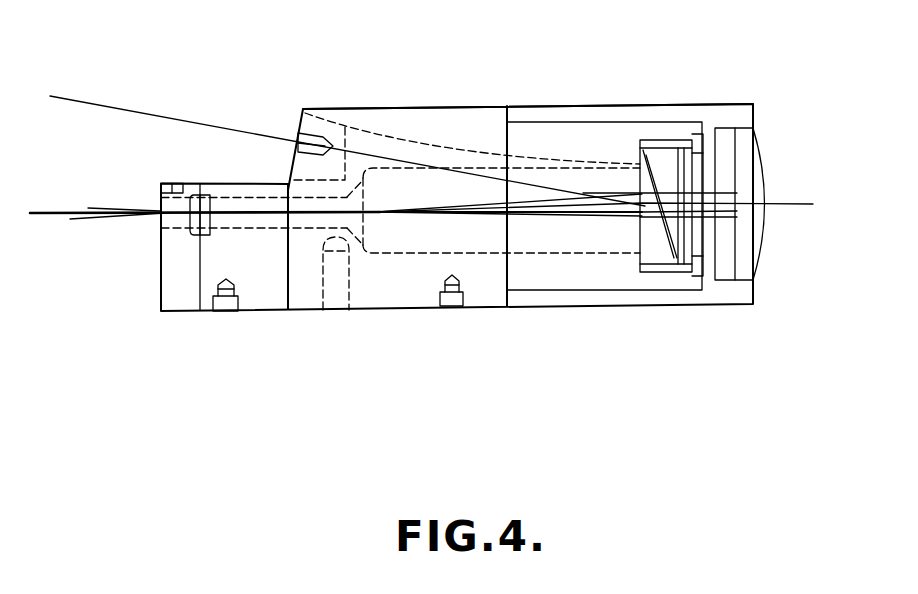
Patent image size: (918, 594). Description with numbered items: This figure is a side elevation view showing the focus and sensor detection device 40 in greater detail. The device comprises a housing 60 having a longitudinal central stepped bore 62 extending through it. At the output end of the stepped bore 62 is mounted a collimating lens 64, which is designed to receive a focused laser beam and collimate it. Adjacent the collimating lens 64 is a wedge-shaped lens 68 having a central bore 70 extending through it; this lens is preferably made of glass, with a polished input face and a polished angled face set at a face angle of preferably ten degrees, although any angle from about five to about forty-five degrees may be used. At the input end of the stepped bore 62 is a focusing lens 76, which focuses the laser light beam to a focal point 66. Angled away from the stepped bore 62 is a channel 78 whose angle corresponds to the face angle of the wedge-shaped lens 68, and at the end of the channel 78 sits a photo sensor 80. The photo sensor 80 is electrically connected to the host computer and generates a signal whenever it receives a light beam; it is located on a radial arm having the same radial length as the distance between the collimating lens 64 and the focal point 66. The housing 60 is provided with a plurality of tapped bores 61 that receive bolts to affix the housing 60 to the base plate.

The focus and sensor detection device 40 is at (345, 109).
The housing 60 is at (388, 311).
The tapped bores 61 is at (225, 311).
The stepped bore 62 is at (583, 253).
The collimating lens 64 is at (772, 156).
The focal point 66 is at (280, 213).
The wedge-shaped lens 68 is at (668, 152).
The central bore 70 is at (676, 245).
The focusing lens 76 is at (200, 238).
The channel 78 is at (457, 145).
The photo sensor 80 is at (308, 135).